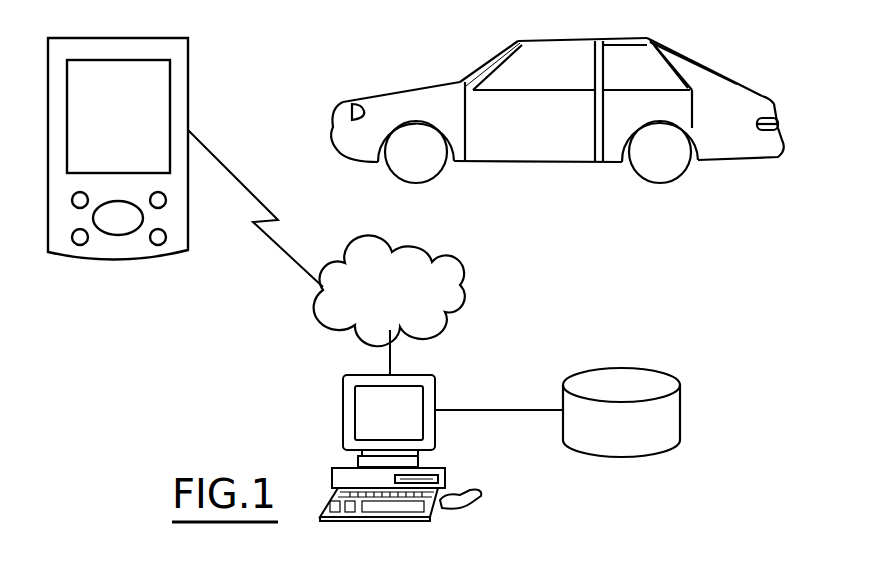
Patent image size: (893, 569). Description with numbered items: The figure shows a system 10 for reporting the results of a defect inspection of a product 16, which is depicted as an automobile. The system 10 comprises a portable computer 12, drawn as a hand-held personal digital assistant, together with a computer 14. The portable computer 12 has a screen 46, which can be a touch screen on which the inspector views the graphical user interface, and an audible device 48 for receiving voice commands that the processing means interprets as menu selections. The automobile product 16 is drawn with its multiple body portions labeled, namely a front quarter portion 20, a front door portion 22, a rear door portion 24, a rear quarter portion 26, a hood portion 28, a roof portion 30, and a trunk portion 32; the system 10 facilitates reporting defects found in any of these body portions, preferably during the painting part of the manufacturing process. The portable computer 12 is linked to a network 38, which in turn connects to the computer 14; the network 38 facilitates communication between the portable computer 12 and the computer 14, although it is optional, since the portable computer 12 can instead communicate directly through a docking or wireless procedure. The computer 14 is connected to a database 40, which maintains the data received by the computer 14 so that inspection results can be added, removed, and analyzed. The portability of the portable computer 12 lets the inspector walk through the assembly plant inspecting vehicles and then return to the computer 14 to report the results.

The system 10 is at (377, 29).
The portable computer 12 is at (154, 150).
The computer 14 is at (435, 368).
The product 16 is at (642, 33).
The front quarter portion 20 is at (551, 113).
The front door portion 22 is at (540, 155).
The rear door portion 24 is at (612, 152).
The rear quarter portion 26 is at (728, 133).
The hood portion 28 is at (391, 92).
The roof portion 30 is at (550, 37).
The trunk portion 32 is at (737, 85).
The network 38 is at (448, 267).
The database 40 is at (637, 372).
The screen 46 is at (173, 85).
The audible device 48 is at (123, 233).